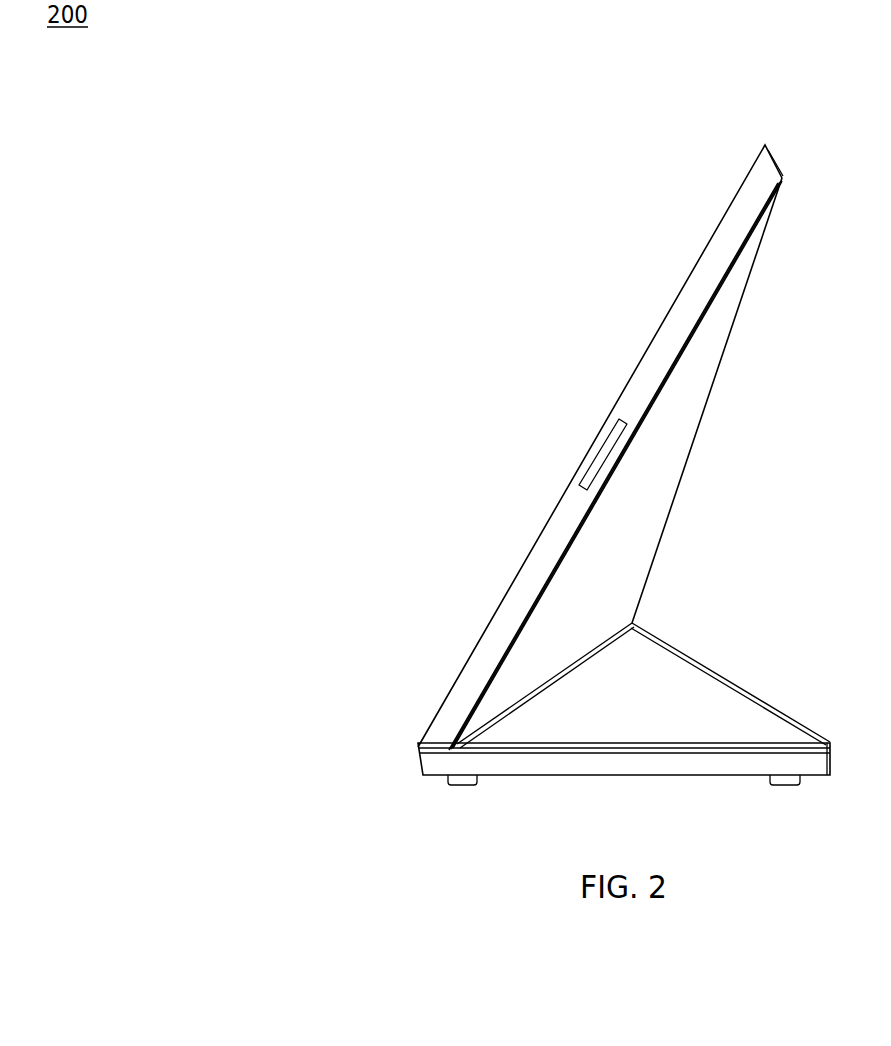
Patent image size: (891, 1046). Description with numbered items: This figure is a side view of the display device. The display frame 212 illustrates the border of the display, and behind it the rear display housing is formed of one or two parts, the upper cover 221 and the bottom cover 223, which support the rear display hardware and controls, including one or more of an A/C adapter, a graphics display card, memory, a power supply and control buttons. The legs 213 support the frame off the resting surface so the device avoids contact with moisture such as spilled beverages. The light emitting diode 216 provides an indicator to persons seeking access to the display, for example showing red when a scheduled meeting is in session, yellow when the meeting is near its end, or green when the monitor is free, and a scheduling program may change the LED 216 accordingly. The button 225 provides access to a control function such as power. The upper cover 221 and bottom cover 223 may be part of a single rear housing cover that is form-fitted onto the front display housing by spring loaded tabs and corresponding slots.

The display frame 212 is at (717, 257).
The legs 213 is at (450, 785).
The light emitting diode (LED) 216 is at (610, 447).
The upper cover 221 is at (657, 467).
The bottom cover 223 is at (735, 697).
The button 225 is at (682, 652).